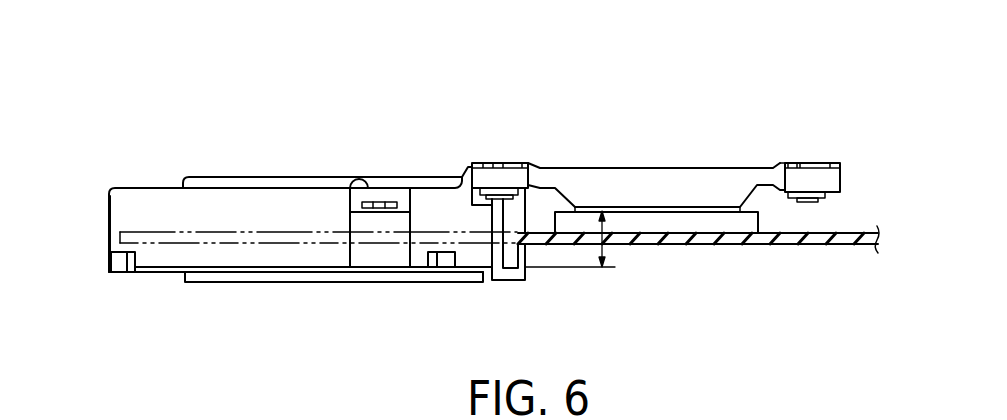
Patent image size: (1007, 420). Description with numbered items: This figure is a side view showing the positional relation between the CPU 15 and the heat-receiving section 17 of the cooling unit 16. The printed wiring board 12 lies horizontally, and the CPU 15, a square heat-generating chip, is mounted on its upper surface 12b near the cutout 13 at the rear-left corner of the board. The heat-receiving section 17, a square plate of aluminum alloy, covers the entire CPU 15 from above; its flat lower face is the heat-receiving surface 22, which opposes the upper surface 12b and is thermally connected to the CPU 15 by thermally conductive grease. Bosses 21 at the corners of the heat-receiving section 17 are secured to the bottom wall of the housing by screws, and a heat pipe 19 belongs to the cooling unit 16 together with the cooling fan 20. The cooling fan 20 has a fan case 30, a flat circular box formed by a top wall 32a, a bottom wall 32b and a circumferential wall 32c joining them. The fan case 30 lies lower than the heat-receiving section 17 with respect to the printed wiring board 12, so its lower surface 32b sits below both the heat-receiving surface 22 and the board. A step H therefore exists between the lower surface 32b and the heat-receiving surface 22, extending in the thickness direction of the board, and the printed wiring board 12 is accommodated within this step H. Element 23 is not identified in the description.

The printed wiring board 12 is at (843, 248).
The upper surface of the printed wiring board 12b is at (848, 230).
The cutout 13 is at (228, 230).
The CPU 15 is at (717, 228).
The cooling unit 16 is at (391, 134).
The heat-receiving section 17 is at (607, 170).
The heat pipe 19 is at (437, 174).
The cooling fan 20 is at (162, 186).
The bosses 21 is at (497, 178).
The heat-receiving surface 22 is at (720, 205).
The plate 23 is at (668, 208).
The fan case 30 is at (247, 261).
The top wall 32a is at (320, 187).
The bottom wall 32b is at (315, 273).
The circumferential wall 32c is at (108, 215).
The step H is at (618, 247).